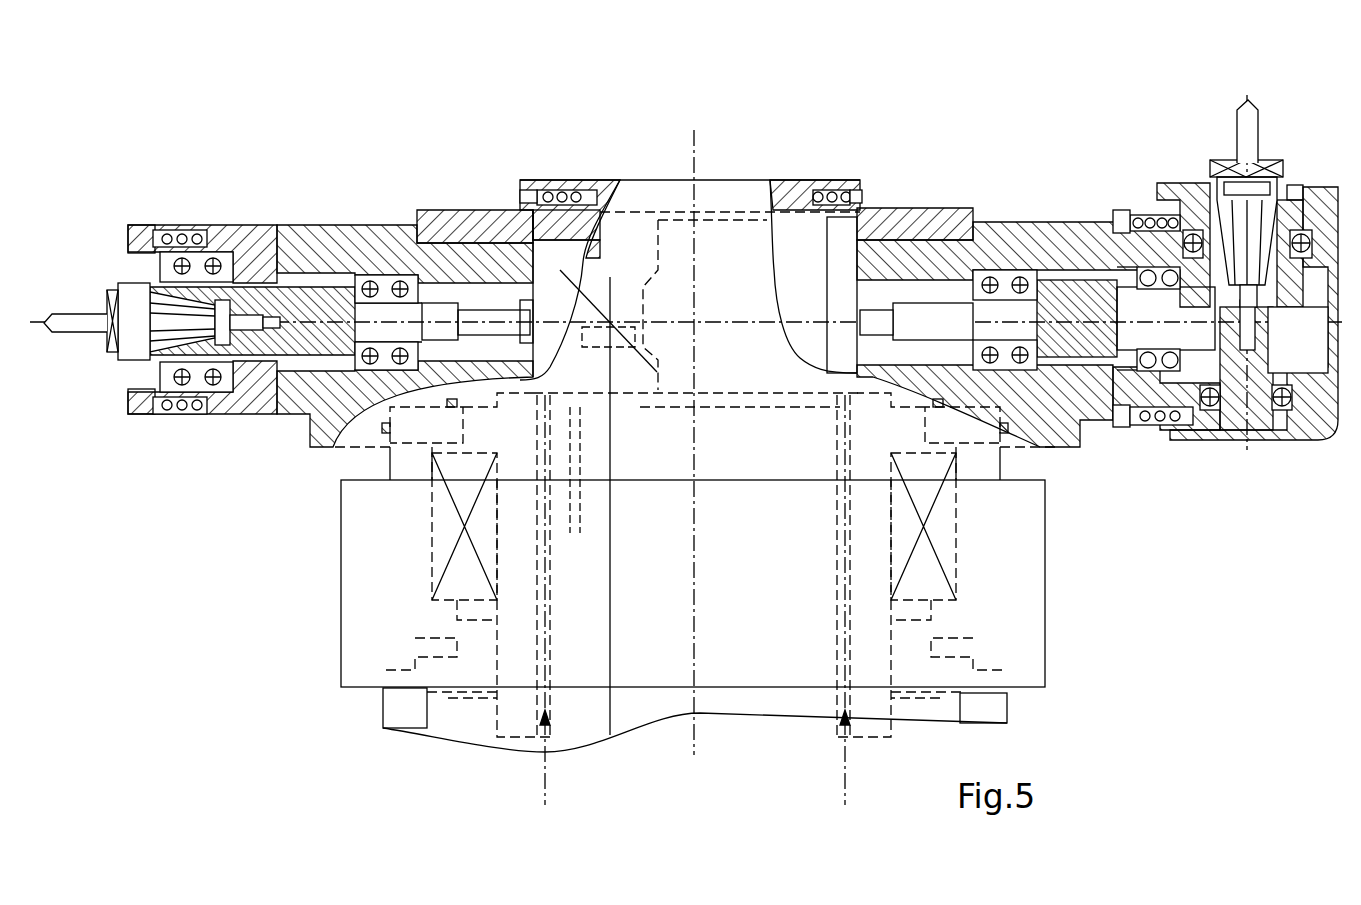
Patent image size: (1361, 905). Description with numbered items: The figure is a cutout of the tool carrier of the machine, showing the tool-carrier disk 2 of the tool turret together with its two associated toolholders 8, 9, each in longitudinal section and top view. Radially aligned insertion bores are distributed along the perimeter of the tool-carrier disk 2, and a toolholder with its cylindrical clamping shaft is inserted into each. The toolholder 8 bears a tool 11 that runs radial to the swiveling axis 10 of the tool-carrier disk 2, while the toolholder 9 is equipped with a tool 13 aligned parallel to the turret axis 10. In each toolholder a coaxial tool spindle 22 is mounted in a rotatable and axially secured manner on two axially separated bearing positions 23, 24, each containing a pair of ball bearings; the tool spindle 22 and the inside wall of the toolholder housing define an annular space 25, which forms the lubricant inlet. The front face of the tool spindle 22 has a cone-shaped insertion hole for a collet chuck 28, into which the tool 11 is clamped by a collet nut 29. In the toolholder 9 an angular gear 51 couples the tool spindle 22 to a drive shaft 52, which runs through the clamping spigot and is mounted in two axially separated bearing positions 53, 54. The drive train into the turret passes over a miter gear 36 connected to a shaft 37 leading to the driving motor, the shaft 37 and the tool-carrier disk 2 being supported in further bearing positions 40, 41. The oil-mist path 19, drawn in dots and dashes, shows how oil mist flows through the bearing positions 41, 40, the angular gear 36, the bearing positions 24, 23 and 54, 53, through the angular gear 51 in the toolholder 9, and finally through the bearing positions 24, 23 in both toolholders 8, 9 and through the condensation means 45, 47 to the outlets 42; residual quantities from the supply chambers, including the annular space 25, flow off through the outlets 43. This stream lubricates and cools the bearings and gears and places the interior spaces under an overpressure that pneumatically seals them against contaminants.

The tool-carrier disk 2 is at (382, 248).
The toolholder 8 is at (245, 208).
The toolholder 9 is at (1283, 87).
The swiveling axis 10 is at (695, 540).
The tool 11 is at (72, 332).
The tool 13 is at (1240, 127).
The oil-mist path 19 is at (547, 777).
The tool spindle 22 is at (315, 300).
The bearing position 23 is at (180, 417).
The bearing position 24 is at (380, 278).
The annular space 25 is at (305, 360).
The collet chuck 28 is at (122, 390).
The collet nut 29 is at (115, 293).
The miter gear 36 is at (663, 363).
The shaft 37 is at (623, 507).
The bearing position 40 is at (575, 437).
The bearing position 41 is at (543, 490).
The outlet 42 is at (190, 250).
The outlet 43 is at (552, 190).
The condensation means 45 is at (565, 195).
The condensation means 47 is at (163, 228).
The angular gear 51 is at (1193, 433).
The drive shaft 52 is at (1060, 307).
The bearing position 53 is at (1120, 262).
The bearing position 54 is at (1000, 210).